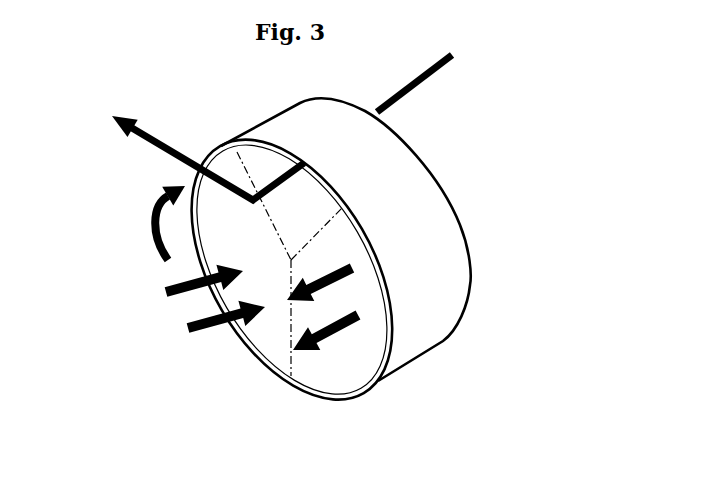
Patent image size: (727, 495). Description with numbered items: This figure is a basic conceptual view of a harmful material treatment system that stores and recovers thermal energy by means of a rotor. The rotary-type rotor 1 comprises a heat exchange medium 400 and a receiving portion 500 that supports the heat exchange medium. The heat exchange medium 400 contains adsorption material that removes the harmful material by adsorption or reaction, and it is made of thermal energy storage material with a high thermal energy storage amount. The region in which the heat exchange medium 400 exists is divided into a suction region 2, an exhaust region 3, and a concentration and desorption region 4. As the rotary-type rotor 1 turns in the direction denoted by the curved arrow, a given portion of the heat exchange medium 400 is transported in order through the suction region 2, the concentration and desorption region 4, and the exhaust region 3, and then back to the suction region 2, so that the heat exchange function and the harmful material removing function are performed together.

The rotary-type rotor 1 is at (250, 118).
The suction region 2 is at (331, 372).
The exhaust region 3 is at (272, 352).
The concentration and desorption region 4 is at (293, 203).
The heat exchange medium 400 is at (256, 247).
The receiving portion 500 is at (430, 248).